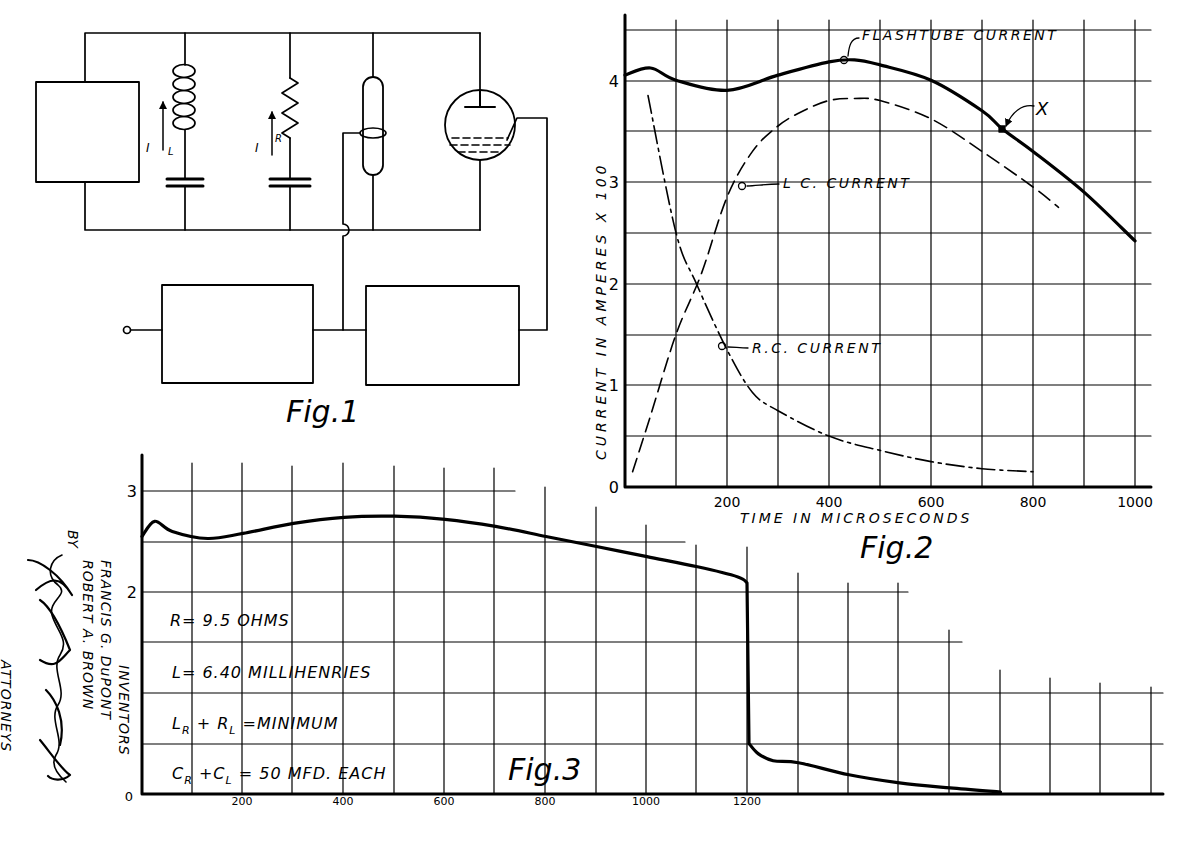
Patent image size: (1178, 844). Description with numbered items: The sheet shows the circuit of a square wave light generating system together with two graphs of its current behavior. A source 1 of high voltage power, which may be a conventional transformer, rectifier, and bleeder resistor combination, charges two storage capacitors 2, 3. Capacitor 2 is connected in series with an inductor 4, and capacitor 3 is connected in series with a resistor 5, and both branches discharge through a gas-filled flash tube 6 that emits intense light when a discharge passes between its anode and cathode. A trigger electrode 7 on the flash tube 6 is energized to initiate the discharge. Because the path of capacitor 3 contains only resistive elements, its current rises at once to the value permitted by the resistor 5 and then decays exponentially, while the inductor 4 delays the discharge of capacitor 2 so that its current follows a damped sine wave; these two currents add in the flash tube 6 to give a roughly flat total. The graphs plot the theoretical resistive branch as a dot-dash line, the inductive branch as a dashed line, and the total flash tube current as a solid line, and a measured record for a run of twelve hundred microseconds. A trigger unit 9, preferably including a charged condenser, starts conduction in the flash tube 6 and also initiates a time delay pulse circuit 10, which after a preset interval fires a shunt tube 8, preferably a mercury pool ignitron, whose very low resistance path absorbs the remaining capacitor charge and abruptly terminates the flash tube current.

The source of high voltage power 1 is at (36, 146).
The storage capacitor 2 is at (178, 188).
The storage capacitor 3 is at (289, 188).
The inductor 4 is at (197, 112).
The resistor 5 is at (298, 118).
The flash tube 6 is at (382, 110).
The trigger electrode 7 is at (387, 133).
The shunt tube 8 is at (490, 96).
The trigger unit 9 is at (257, 285).
The time delay pulse circuit 10 is at (465, 286).